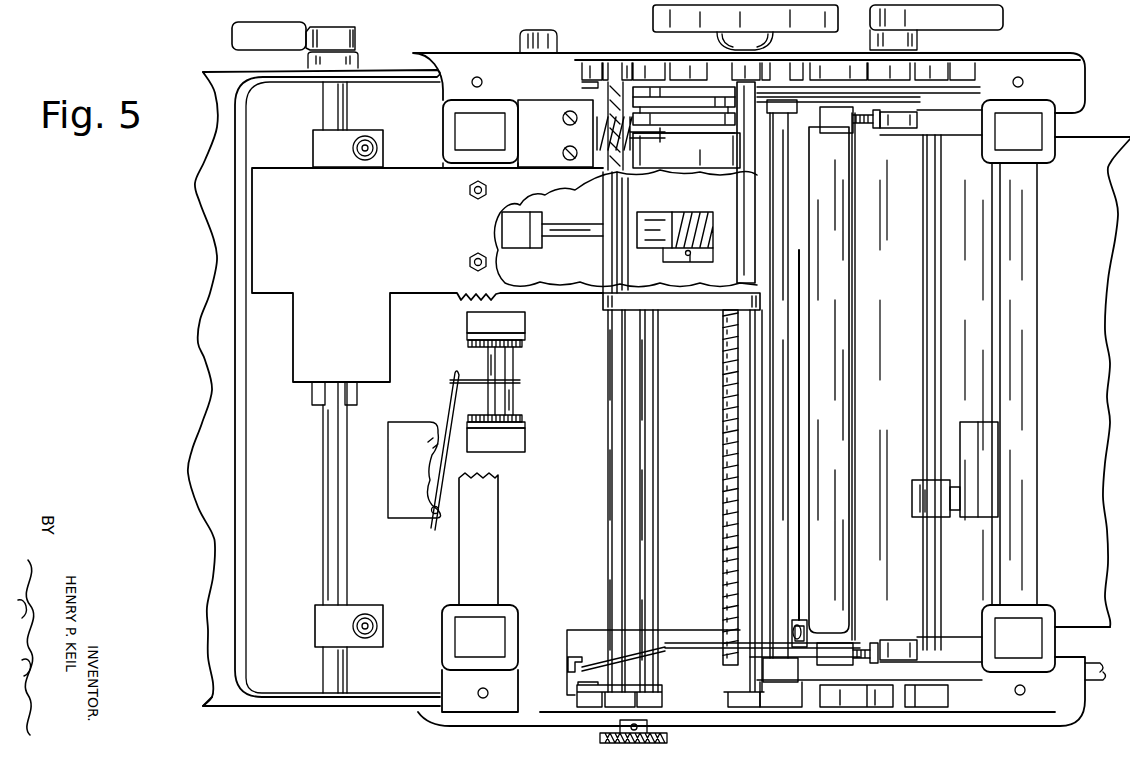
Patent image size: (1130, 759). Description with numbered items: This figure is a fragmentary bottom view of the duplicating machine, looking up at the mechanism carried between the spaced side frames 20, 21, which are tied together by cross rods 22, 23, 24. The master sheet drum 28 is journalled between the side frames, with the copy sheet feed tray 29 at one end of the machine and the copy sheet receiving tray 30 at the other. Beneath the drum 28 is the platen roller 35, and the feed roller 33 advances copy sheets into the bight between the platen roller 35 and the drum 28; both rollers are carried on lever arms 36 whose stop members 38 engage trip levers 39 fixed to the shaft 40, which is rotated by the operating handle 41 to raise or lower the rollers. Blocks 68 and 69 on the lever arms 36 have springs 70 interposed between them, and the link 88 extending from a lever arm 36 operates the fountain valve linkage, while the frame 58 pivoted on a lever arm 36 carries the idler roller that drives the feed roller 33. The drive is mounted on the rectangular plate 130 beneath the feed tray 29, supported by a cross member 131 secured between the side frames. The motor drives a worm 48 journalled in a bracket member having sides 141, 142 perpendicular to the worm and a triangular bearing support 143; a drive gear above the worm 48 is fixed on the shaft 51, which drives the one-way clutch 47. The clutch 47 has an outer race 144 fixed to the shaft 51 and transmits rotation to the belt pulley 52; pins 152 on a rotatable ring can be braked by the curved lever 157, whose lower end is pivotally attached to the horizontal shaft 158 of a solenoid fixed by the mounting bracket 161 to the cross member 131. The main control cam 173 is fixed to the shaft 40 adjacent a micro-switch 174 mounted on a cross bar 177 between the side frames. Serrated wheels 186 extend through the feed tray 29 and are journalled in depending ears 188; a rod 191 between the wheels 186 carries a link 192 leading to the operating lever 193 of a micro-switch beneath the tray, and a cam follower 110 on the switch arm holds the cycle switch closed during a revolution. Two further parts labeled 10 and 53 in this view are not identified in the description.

The guide rails 10 is at (812, 78).
The cam follower 110 is at (489, 66).
The side frame 20 is at (641, 55).
The side frame 21 is at (740, 720).
The cross rod 22 is at (737, 402).
The cross rod 23 is at (608, 396).
The cross rod 24 is at (655, 475).
The master sheet drum 28 is at (931, 380).
The copy sheet feed tray 29 is at (575, 511).
The copy sheet receiving tray 30 is at (1087, 375).
The feed roller 33 is at (722, 512).
The platen roller 35 is at (845, 272).
The lever arm 36 is at (805, 652).
The stop member 38 is at (876, 130).
The trip lever 39 is at (902, 129).
The shaft 40 is at (941, 310).
The operating handle 41 is at (1100, 684).
The clutch 47 is at (698, 172).
The worm 48 is at (722, 218).
The shaft 51 is at (682, 206).
The belt pulley 52 is at (668, 118).
The cross bar 53 is at (703, 105).
The frame 58 is at (850, 680).
The block 68 is at (808, 628).
The block 69 is at (793, 634).
The spring 70 is at (800, 625).
The link 88 is at (707, 647).
The rectangular plate 130 is at (408, 232).
The cross member 131 is at (490, 548).
The side of bracket member 141 is at (602, 262).
The side of bracket member 142 is at (728, 255).
The triangular bearing support 143 is at (707, 300).
The outer race 144 is at (420, 463).
The pin 152 is at (713, 128).
The curved lever 157 is at (660, 137).
The horizontal shaft 158 is at (672, 125).
The mounting bracket 161 is at (563, 146).
The cam 173 is at (918, 485).
The micro-switch 174 is at (988, 470).
The cross bar 177 is at (1023, 278).
The serrated wheel 186 is at (521, 343).
The ear 188 is at (521, 321).
The rod 191 is at (516, 355).
The link 192 is at (521, 383).
The operating lever 193 is at (447, 418).